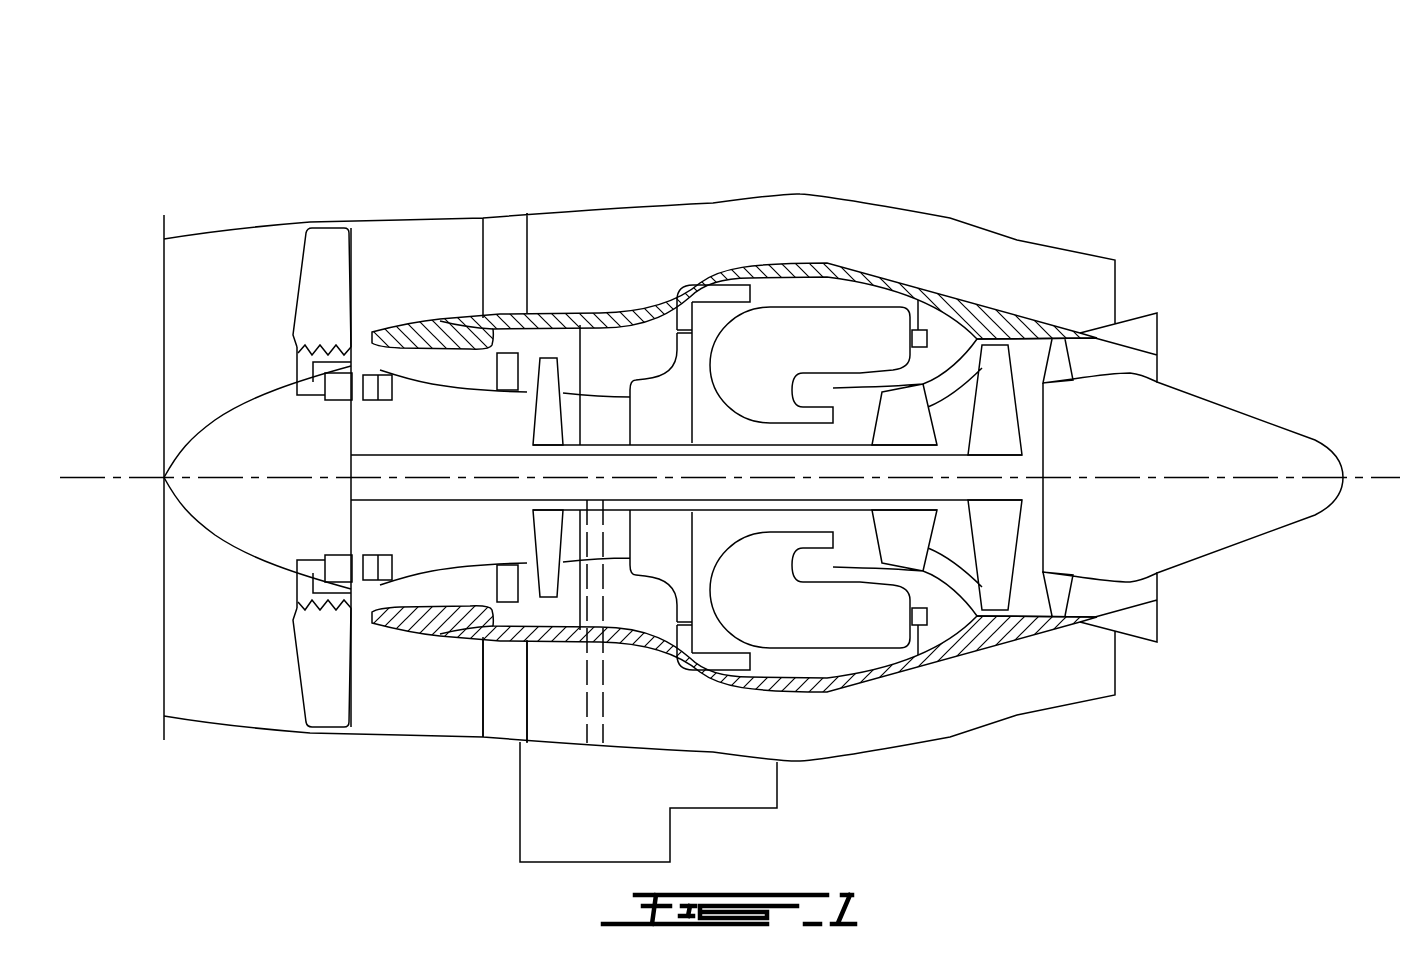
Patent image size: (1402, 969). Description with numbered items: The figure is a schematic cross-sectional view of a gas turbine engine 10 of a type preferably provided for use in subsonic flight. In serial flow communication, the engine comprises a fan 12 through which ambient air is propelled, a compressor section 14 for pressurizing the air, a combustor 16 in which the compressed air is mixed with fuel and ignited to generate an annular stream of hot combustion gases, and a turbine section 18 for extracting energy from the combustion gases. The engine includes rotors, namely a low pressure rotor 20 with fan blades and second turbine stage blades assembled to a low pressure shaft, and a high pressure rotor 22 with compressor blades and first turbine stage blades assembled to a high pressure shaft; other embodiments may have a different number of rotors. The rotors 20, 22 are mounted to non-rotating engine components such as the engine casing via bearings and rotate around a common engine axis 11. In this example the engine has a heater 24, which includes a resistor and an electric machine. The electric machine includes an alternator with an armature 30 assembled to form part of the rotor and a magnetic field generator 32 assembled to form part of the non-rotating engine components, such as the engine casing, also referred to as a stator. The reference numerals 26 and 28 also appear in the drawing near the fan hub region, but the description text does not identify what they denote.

The gas turbine engine 10 is at (968, 152).
The engine axis 11 is at (1380, 478).
The fan 12 is at (318, 637).
The compressor section 14 is at (598, 377).
The combustor 16 is at (813, 330).
The turbine section 18 is at (953, 547).
The low pressure rotor 20 is at (457, 455).
The high pressure rotor 22 is at (580, 330).
The heater 24 is at (272, 307).
The nose cone 26 is at (295, 366).
The fan hub 28 is at (343, 333).
The armature 30 is at (337, 390).
The magnetic field generator 32 is at (380, 400).